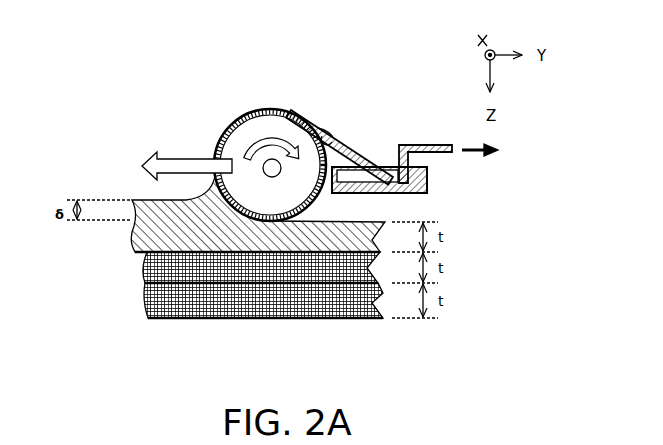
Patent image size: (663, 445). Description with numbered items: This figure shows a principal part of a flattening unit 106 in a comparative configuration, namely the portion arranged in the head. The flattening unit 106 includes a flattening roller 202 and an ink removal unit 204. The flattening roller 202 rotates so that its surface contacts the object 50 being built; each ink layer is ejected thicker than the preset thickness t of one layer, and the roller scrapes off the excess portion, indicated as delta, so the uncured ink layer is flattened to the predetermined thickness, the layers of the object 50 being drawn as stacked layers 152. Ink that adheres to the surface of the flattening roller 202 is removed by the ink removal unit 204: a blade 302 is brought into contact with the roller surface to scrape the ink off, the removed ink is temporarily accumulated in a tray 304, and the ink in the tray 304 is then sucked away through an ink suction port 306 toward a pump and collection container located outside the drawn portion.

The flattening unit 106 is at (165, 92).
The flattening roller 202 is at (267, 128).
The ink removal unit 204 is at (386, 130).
The blade 302 is at (343, 152).
The tray 304 is at (427, 177).
The ink suction port 306 is at (437, 145).
The sheet layer 152 is at (133, 238).
The object 50 is at (216, 280).